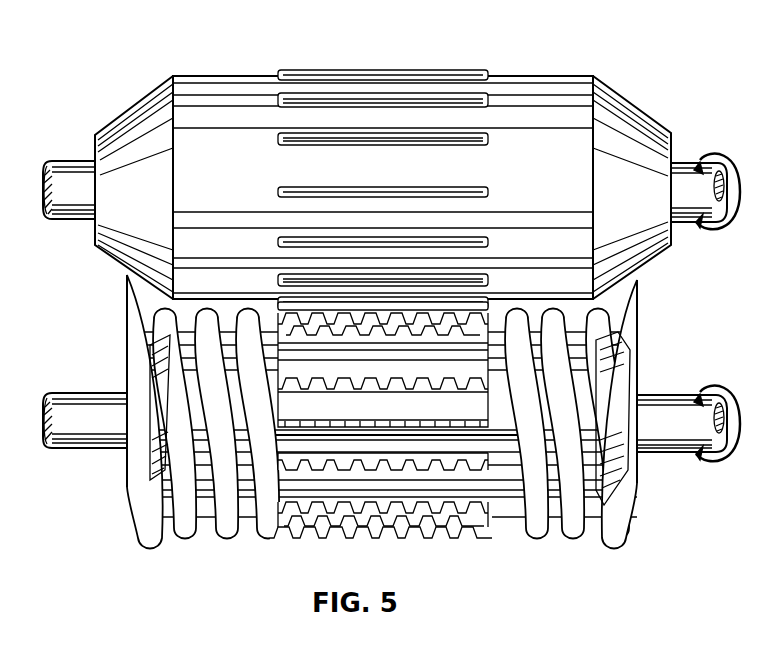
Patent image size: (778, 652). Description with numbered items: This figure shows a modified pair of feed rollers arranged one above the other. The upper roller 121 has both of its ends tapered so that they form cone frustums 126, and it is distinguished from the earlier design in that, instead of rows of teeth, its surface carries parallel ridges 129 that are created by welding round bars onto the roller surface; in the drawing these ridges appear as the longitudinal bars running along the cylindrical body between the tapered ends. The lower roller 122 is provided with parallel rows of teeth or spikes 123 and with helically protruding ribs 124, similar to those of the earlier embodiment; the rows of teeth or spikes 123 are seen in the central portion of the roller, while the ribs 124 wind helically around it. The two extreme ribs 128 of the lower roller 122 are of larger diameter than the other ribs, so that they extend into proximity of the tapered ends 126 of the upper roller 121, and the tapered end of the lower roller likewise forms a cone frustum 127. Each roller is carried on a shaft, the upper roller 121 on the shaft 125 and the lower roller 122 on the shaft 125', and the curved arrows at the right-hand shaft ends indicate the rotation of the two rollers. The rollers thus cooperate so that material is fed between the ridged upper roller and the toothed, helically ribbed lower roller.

The roller 121 is at (527, 118).
The roller 122 is at (554, 540).
The rows of teeth or spikes 123 is at (452, 535).
The helically protruding ribs 124 is at (226, 535).
The shaft 125 is at (385, 150).
The shaft 125' is at (385, 450).
The cone frustum 126 is at (147, 128).
The cone frustum 127 is at (610, 490).
The extreme ribs 128 is at (145, 545).
The parallel ridges 129 is at (336, 80).